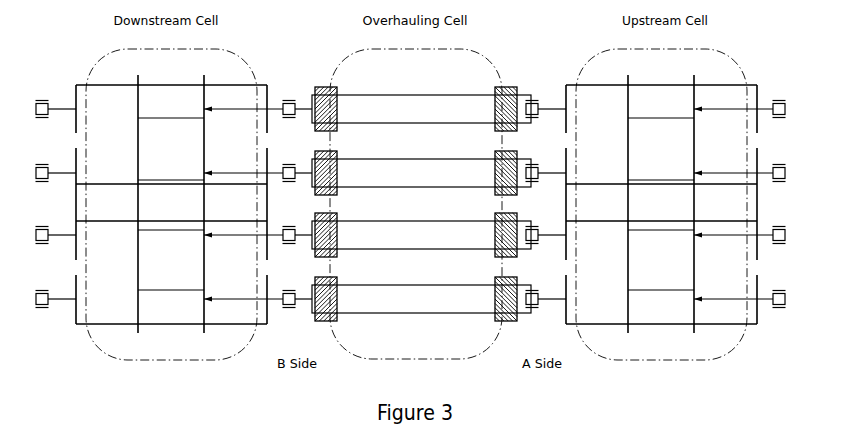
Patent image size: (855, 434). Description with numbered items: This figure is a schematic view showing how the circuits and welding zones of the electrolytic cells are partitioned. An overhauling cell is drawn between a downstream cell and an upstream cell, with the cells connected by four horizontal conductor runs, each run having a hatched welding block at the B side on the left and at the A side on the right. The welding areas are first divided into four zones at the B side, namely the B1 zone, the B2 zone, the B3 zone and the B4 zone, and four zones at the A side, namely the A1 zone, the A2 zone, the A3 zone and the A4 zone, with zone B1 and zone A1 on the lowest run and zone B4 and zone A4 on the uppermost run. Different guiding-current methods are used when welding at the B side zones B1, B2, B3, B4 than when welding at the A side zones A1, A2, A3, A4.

The B4 welding zone B4 is at (421, 109).
The A4 welding zone A4 is at (491, 109).
The B3 welding zone B3 is at (421, 173).
The A3 welding zone A3 is at (491, 173).
The B2 welding zone B2 is at (421, 235).
The A2 welding zone A2 is at (491, 235).
The B1 welding zone B1 is at (421, 299).
The A1 welding zone A1 is at (491, 299).